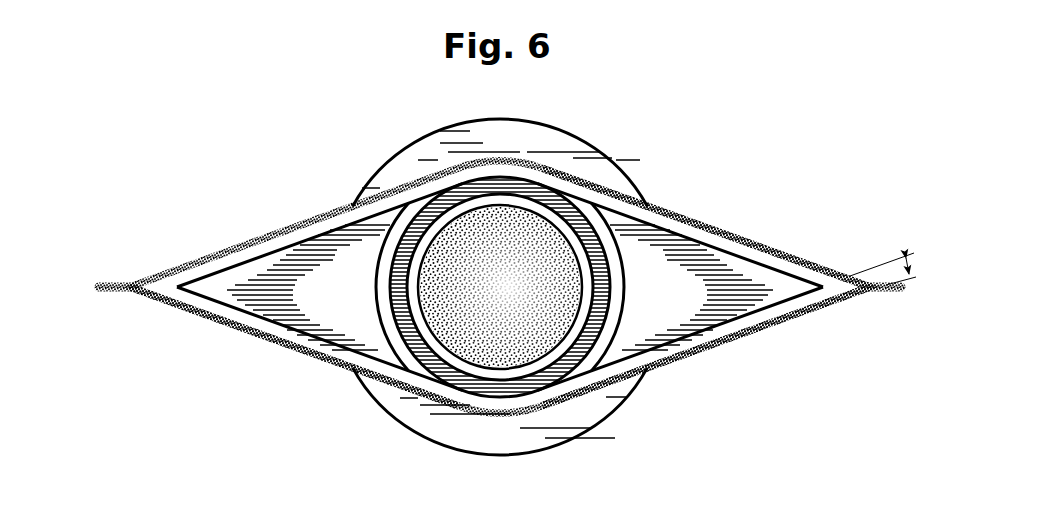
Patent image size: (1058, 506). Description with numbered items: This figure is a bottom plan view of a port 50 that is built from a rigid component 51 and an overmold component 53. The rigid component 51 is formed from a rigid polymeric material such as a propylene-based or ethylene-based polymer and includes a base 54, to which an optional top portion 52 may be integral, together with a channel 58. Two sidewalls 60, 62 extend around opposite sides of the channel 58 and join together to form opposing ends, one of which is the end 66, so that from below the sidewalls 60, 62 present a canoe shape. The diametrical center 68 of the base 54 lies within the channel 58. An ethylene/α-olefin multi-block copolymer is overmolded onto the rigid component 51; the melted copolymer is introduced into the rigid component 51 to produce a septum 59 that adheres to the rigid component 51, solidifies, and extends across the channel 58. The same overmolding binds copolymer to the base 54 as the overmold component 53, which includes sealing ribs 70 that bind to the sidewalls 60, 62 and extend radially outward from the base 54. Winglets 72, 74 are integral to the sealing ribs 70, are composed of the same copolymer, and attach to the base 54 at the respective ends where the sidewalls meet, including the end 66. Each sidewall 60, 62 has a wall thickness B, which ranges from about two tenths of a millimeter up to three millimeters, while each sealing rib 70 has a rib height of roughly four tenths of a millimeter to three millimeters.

The port 50 is at (796, 131).
The rigid component 51 is at (272, 198).
The top portion 52 is at (604, 139).
The overmold component 53 is at (849, 218).
The base 54 is at (266, 271).
The channel 58 is at (560, 370).
The septum 59 is at (460, 246).
The sidewall 60 is at (332, 226).
The sidewall 62 is at (290, 346).
The end 66 is at (906, 300).
The diametrical center 68 is at (88, 292).
The sealing ribs 70 is at (682, 210).
The winglet 72 is at (121, 293).
The winglet 74 is at (868, 299).
The wall thickness B is at (910, 251).